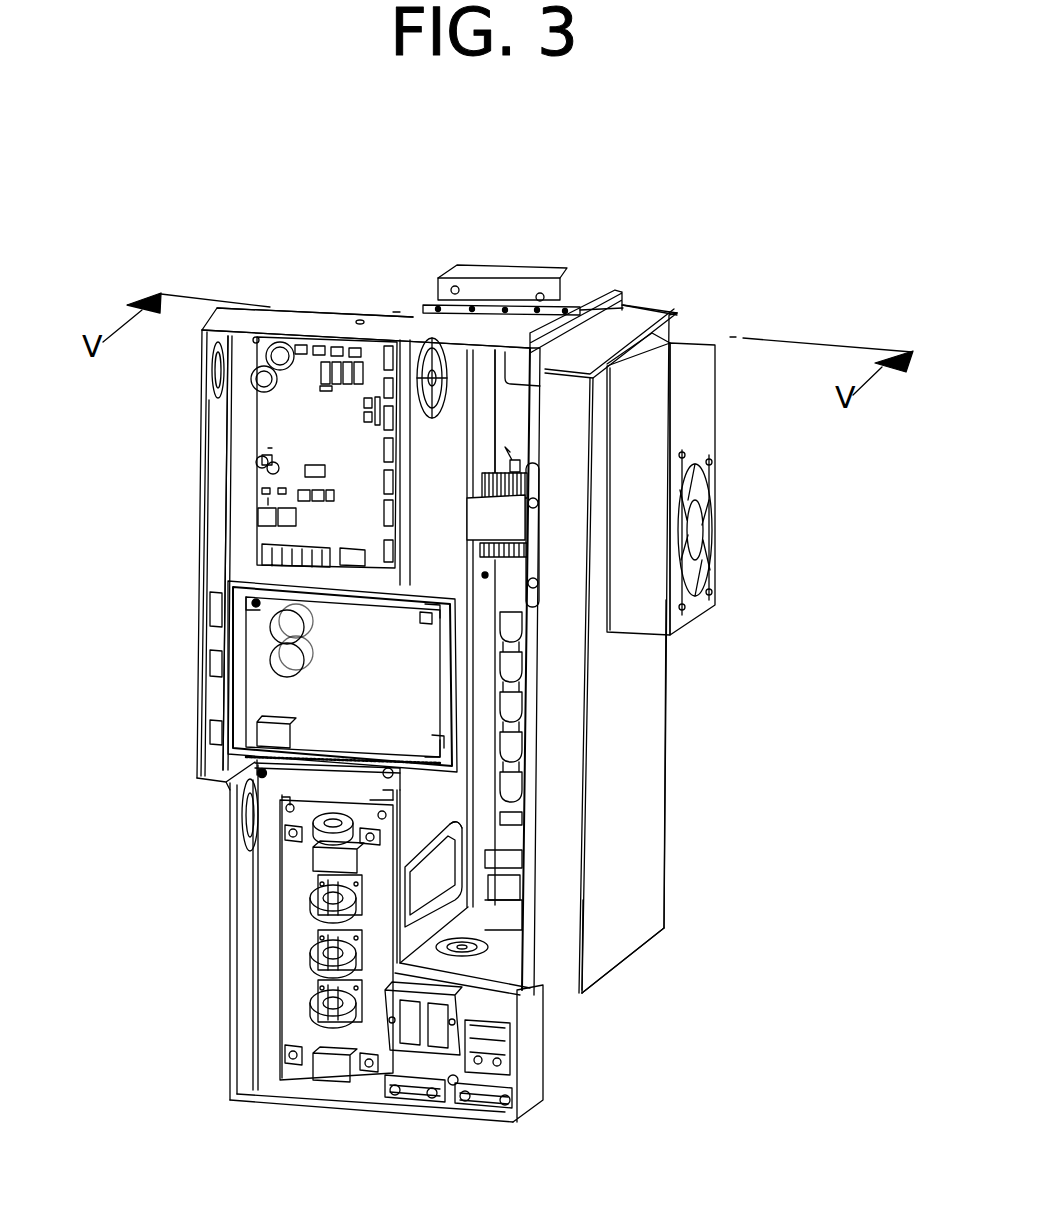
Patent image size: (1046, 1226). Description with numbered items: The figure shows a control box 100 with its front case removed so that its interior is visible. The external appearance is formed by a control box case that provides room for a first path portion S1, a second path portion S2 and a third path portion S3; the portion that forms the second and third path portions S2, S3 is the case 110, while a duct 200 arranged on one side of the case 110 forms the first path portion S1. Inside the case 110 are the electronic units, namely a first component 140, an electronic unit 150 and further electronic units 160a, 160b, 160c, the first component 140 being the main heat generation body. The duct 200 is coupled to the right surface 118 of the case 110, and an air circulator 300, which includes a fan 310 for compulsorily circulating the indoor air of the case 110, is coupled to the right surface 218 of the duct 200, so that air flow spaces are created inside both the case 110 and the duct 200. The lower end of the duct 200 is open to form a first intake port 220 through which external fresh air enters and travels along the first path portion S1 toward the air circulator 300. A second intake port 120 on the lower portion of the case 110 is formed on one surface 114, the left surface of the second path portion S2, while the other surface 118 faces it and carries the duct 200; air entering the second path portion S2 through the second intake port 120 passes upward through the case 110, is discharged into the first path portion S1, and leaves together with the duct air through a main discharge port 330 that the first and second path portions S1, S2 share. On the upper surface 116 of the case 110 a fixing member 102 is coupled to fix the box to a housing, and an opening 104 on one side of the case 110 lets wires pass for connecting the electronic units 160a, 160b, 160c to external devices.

The control box 100 is at (433, 158).
The fixing member 102 is at (537, 274).
The opening 104 is at (428, 367).
The case 110 is at (265, 296).
The one surface 114 is at (412, 317).
The upper surface 116 is at (648, 307).
The right surface 118 is at (673, 313).
The second intake port 120 is at (427, 846).
The first component 140 is at (520, 750).
The electronic unit 150 is at (520, 522).
The electronic unit 160a is at (262, 500).
The electronic unit 160b is at (262, 650).
The electronic unit 160c is at (290, 990).
The duct 200 is at (650, 311).
The right surface of the duct 218 is at (640, 712).
The first intake port 220 is at (600, 980).
The air circulator 300 is at (722, 400).
The fan 310 is at (700, 533).
The main discharge port 330 is at (710, 578).
The first path portion S1 is at (600, 853).
The second path portion S2 is at (468, 405).
The third path portion S3 is at (236, 413).